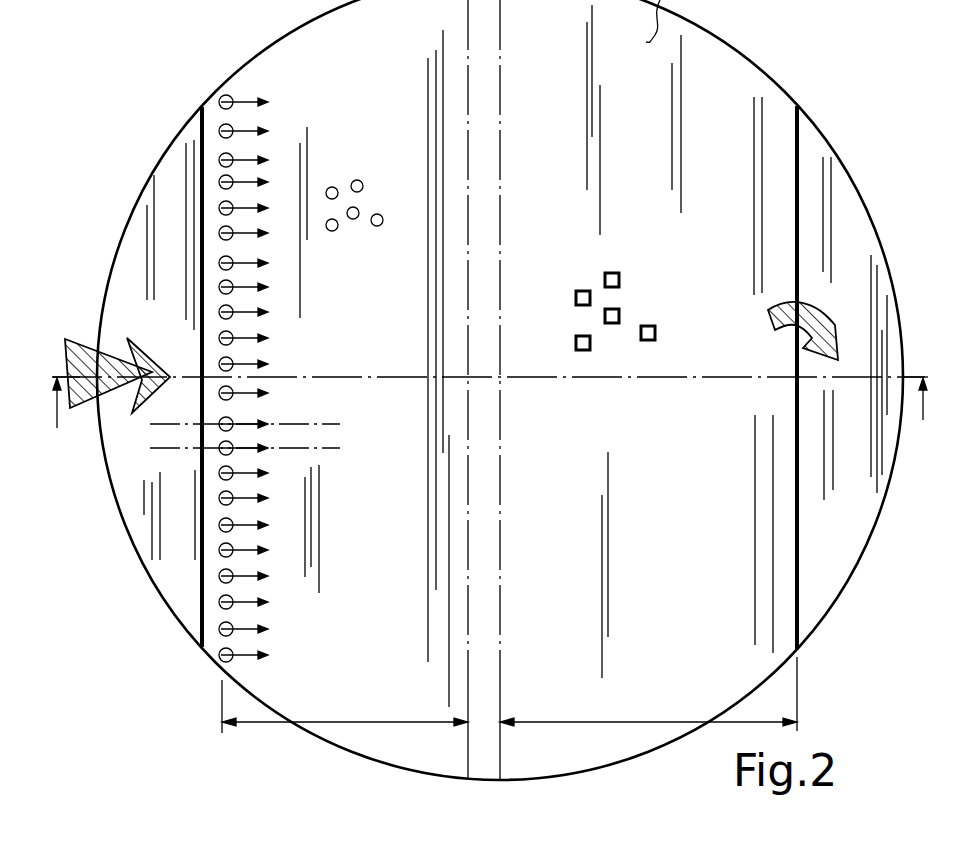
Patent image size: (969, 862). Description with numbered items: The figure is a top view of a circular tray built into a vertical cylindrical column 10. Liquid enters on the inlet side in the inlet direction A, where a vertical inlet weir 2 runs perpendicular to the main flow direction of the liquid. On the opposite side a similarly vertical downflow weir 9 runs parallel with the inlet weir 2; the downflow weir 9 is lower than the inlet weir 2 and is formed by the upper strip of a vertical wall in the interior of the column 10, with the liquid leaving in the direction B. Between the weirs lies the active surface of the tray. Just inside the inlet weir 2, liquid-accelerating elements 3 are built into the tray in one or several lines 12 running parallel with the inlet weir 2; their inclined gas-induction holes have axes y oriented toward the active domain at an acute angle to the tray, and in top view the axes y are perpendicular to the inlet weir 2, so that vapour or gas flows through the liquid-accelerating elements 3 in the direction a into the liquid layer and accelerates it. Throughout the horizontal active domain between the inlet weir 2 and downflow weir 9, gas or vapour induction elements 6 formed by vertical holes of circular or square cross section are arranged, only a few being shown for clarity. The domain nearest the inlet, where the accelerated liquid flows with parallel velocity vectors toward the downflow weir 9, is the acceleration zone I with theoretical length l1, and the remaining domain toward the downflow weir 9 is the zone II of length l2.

The inlet weir 2 is at (200, 268).
The liquid-accelerating elements 3 is at (212, 233).
The gas or vapour induction elements 6 is at (378, 213).
The downflow weir 9 is at (798, 148).
The column 10 is at (178, 124).
The lines of liquid-accelerating elements 12 is at (218, 74).
The direction of vapour or gas flow through liquid-accelerating elements a is at (242, 131).
The axis of gas-induction holes y is at (156, 424).
The inlet direction A is at (88, 343).
The outflow direction B is at (809, 316).
The acceleration zone I is at (292, 730).
The second zone of the tray II is at (768, 680).
The theoretical length of acceleration zone l1 is at (352, 705).
The length of second zone l2 is at (613, 722).